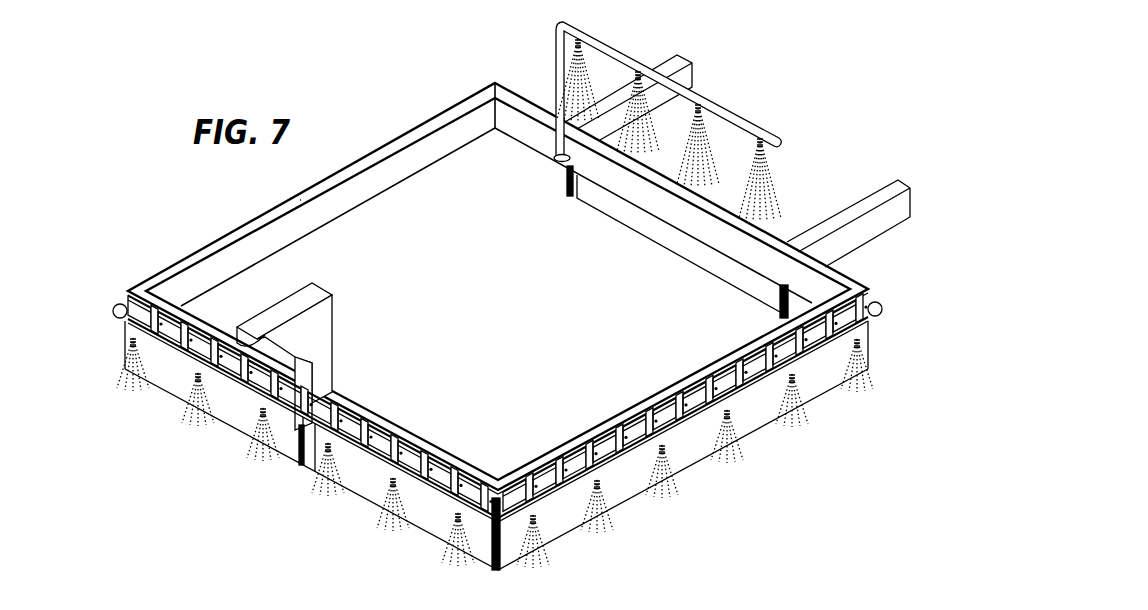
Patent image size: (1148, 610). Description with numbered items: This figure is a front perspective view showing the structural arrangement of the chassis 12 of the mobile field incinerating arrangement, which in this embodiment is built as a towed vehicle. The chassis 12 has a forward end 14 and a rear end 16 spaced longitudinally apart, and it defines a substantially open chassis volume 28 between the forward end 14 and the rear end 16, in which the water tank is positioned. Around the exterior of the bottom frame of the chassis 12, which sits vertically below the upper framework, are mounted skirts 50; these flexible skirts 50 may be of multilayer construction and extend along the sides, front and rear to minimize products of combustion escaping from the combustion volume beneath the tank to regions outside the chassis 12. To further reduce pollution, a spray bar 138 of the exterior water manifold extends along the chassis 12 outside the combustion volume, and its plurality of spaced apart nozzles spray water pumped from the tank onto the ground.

The chassis 12 is at (398, 112).
The forward end 14 is at (245, 519).
The rear end 16 is at (826, 100).
The open chassis volume 28 is at (512, 323).
The skirts 50 is at (432, 525).
The spray bar 138 is at (736, 400).